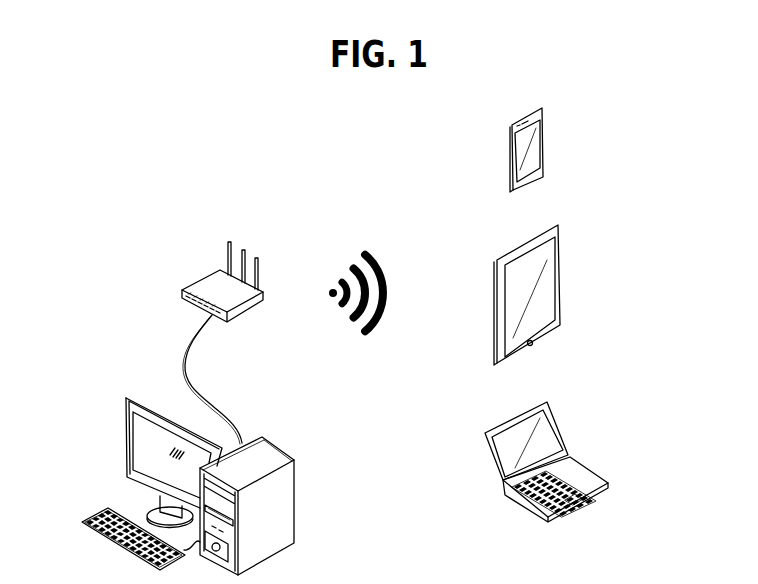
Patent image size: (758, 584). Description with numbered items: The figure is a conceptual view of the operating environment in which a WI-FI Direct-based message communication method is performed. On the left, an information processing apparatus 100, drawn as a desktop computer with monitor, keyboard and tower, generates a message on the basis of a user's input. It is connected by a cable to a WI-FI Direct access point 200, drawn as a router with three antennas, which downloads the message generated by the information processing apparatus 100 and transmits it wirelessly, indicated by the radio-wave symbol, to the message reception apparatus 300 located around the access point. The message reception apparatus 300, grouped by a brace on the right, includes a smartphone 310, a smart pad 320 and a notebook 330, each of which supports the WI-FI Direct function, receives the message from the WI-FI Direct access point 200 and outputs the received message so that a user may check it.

The information processing apparatus 100 is at (135, 455).
The WI-FI Direct access point 200 is at (203, 283).
The message reception apparatus 300 is at (586, 315).
The smartphone 310 is at (553, 150).
The smart pad 320 is at (550, 295).
The notebook 330 is at (548, 462).